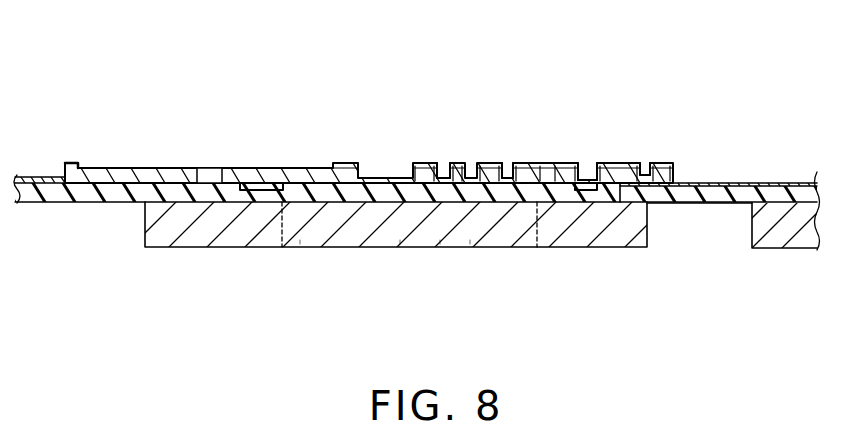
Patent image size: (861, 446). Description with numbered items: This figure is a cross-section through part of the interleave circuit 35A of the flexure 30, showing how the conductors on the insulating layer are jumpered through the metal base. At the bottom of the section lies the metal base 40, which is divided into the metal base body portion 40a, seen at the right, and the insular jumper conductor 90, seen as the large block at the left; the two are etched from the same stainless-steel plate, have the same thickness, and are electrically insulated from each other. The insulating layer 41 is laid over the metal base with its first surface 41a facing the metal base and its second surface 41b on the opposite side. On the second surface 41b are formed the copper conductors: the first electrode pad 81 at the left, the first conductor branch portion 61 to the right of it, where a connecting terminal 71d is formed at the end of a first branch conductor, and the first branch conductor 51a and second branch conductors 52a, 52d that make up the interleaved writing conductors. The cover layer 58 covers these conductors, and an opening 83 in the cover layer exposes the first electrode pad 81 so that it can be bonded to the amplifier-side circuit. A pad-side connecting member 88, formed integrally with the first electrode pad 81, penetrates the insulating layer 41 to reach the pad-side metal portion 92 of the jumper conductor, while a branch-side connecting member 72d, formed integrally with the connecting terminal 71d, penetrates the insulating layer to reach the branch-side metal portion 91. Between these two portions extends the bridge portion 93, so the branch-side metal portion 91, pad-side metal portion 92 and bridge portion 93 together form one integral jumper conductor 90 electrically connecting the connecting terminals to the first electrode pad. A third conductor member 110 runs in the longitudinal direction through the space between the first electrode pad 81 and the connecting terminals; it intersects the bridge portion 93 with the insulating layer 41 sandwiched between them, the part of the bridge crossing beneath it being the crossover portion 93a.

The flexure 30 is at (265, 250).
The interleave circuit 35A is at (688, 80).
The metal base 40 is at (818, 235).
The metal base body portion 40a is at (763, 236).
The insulating layer 41 is at (685, 202).
The first surface 41a is at (798, 216).
The second surface 41b is at (765, 183).
The first branch conductor 51a is at (490, 163).
The second branch conductor 52a is at (518, 163).
The second branch conductor 52d is at (665, 167).
The cover layer 58 is at (625, 167).
The first conductor branch portion 61 is at (360, 118).
The connecting terminal 71d is at (562, 163).
The branch-side connecting member 72d is at (585, 190).
The first electrode pad 81 is at (258, 167).
The opening 83 is at (84, 165).
The pad-side connecting member 88 is at (200, 195).
The jumper conductor 90 is at (405, 232).
The branch-side metal portion 91 is at (600, 235).
The pad-side metal portion 92 is at (216, 236).
The bridge portion 93 is at (350, 233).
The crossover portion 93a is at (452, 228).
The third conductor member 110 is at (452, 163).